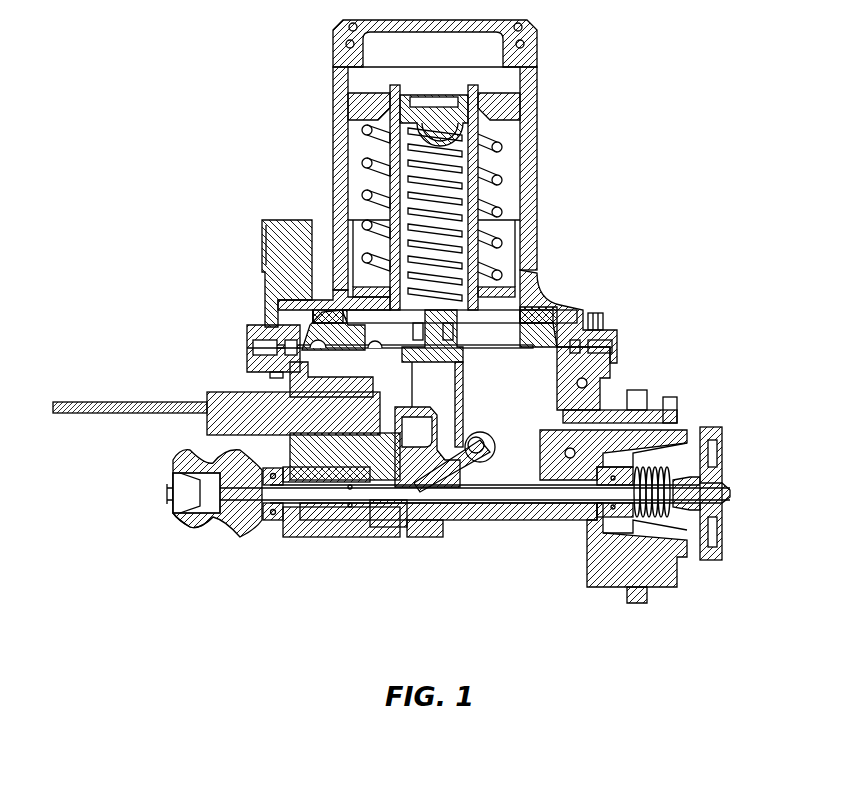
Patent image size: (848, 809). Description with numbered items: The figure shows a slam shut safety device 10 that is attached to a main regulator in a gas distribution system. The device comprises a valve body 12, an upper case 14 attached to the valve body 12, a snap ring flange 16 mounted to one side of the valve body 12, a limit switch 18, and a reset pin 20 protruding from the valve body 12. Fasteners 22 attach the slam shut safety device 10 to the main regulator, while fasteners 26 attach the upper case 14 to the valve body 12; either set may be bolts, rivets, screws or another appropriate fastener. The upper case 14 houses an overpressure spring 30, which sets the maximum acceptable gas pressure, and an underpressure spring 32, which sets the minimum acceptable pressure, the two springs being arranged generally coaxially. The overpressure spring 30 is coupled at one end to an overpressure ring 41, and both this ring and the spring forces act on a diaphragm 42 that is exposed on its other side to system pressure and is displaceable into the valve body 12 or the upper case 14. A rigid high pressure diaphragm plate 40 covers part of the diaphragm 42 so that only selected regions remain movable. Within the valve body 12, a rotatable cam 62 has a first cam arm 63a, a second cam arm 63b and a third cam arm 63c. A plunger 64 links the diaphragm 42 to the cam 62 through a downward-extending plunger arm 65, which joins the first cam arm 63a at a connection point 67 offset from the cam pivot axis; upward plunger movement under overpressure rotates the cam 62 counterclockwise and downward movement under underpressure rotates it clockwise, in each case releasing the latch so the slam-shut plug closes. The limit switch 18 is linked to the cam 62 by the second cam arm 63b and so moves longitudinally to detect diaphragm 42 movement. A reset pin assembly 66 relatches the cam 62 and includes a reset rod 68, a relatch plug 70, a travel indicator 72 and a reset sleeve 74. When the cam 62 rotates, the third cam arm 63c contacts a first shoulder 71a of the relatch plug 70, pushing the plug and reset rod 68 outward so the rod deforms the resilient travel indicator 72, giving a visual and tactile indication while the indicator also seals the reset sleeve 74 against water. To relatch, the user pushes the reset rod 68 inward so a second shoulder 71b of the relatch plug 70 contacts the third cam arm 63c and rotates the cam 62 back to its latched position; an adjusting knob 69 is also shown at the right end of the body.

The slam shut safety device 10 is at (690, 130).
The valve body 12 is at (615, 378).
The upper case 14 is at (540, 120).
The snap ring flange 16 is at (644, 603).
The limit switch 18 is at (207, 390).
The reset pin 20 is at (178, 525).
The fasteners 22 is at (682, 403).
The fasteners 26 is at (593, 312).
The overpressure spring 30 is at (502, 172).
The underpressure spring 32 is at (445, 135).
The high pressure diaphragm plate 40 is at (548, 300).
The overpressure ring 41 is at (370, 290).
The diaphragm 42 is at (562, 352).
The cam 62 is at (470, 475).
The first cam arm 63a is at (490, 440).
The second cam arm 63b is at (393, 397).
The third cam arm 63c is at (430, 528).
The plunger 64 is at (465, 372).
The plunger arm 65 is at (455, 398).
The reset pin assembly 66 is at (248, 540).
The connection point 67 is at (530, 485).
The reset rod 68 is at (322, 537).
The adjusting knob 69 is at (725, 445).
The relatch plug 70 is at (386, 528).
The first shoulder 71a is at (412, 500).
The second shoulder 71b is at (437, 500).
The travel indicator 72 is at (172, 478).
The reset sleeve 74 is at (195, 533).